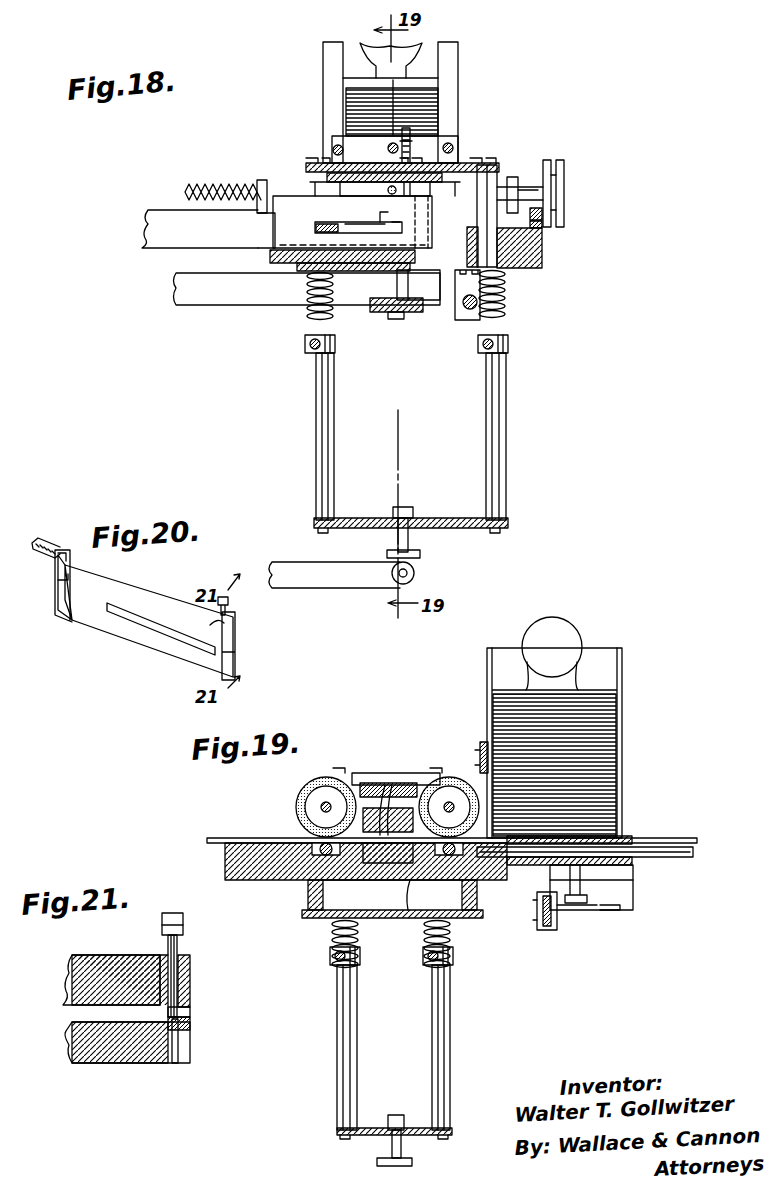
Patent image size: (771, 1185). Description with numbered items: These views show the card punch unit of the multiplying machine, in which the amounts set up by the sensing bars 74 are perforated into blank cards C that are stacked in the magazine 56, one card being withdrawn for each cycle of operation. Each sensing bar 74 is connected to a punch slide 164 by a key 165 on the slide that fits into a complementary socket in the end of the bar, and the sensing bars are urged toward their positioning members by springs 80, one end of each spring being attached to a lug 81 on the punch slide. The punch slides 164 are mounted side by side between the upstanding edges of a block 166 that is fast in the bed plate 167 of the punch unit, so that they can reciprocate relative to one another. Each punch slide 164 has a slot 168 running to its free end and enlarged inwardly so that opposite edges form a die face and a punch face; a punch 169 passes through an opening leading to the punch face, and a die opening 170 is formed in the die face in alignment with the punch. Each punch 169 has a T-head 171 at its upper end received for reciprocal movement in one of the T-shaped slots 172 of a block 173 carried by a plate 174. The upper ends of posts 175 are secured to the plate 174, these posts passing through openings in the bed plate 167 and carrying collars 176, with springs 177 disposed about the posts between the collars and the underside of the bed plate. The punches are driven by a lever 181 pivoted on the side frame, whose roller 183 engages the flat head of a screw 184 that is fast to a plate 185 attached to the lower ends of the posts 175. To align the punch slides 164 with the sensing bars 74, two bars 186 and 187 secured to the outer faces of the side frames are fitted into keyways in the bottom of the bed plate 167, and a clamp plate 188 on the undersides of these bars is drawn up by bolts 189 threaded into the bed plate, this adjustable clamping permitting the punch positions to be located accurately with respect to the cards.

In FIG. 18, the magazine 56 is at (330, 106).
In FIG. 19, the magazine 56 is at (487, 682).
In FIG. 18, the blank cards C is at (430, 106).
In FIG. 19, the blank cards C is at (595, 753).
In FIG. 18, the sensing bars 74 is at (165, 214).
In FIG. 18, the springs 80 is at (206, 182).
In FIG. 20, the springs 80 is at (42, 540).
In FIG. 18, the lug 81 is at (260, 180).
In FIG. 20, the lug 81 is at (70, 548).
In FIG. 18, the punch slide 164 is at (288, 205).
In FIG. 20, the punch slide 164 is at (118, 600).
In FIG. 19, the punch slide 164 is at (390, 785).
In FIG. 21, the punch slide 164 is at (118, 1050).
In FIG. 18, the key 165 is at (262, 224).
In FIG. 20, the key 165 is at (58, 594).
In FIG. 19, the block 166 is at (408, 918).
In FIG. 18, the bed plate 167 is at (542, 250).
In FIG. 19, the bed plate 167 is at (246, 870).
In FIG. 18, the slot 168 is at (384, 214).
In FIG. 20, the slot 168 is at (156, 636).
In FIG. 21, the slot 168 is at (192, 1013).
In FIG. 18, the punch 169 is at (478, 165).
In FIG. 20, the punch 169 is at (236, 636).
In FIG. 21, the punch 169 is at (178, 944).
In FIG. 21, the die opening 170 is at (192, 1027).
In FIG. 18, the T-head 171 is at (423, 166).
In FIG. 20, the T-head 171 is at (230, 598).
In FIG. 21, the T-head 171 is at (178, 914).
In FIG. 18, the T-shaped slots 172 is at (350, 190).
In FIG. 19, the T-shaped slots 172 is at (363, 810).
In FIG. 18, the block 173 is at (342, 176).
In FIG. 19, the block 173 is at (378, 785).
In FIG. 18, the plate 174 is at (375, 166).
In FIG. 19, the plate 174 is at (410, 780).
In FIG. 18, the posts 175 is at (500, 168).
In FIG. 19, the posts 175 is at (337, 1033).
In FIG. 18, the collars 176 is at (335, 345).
In FIG. 19, the collars 176 is at (333, 967).
In FIG. 18, the springs 177 is at (308, 312).
In FIG. 19, the springs 177 is at (334, 925).
In FIG. 18, the lever 181 is at (318, 582).
In FIG. 18, the roller 183 is at (414, 578).
In FIG. 18, the screw 184 is at (412, 540).
In FIG. 19, the screw 184 is at (390, 1148).
In FIG. 18, the plate 185 is at (432, 518).
In FIG. 19, the plate 185 is at (372, 1128).
In FIG. 19, the bar 186 is at (308, 896).
In FIG. 18, the bar 187 is at (186, 296).
In FIG. 19, the bar 187 is at (480, 888).
In FIG. 18, the clamp plate 188 is at (415, 314).
In FIG. 19, the clamp plate 188 is at (410, 940).
In FIG. 18, the bolts 189 is at (398, 286).
In FIG. 19, the bolts 189 is at (355, 896).